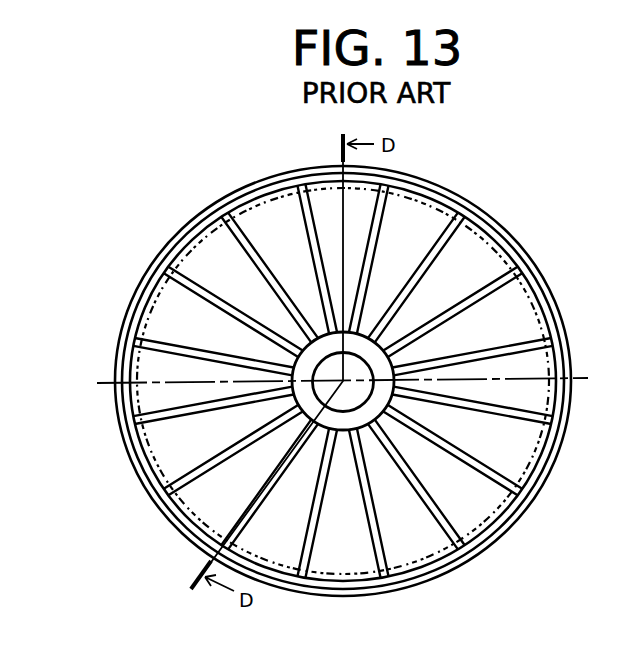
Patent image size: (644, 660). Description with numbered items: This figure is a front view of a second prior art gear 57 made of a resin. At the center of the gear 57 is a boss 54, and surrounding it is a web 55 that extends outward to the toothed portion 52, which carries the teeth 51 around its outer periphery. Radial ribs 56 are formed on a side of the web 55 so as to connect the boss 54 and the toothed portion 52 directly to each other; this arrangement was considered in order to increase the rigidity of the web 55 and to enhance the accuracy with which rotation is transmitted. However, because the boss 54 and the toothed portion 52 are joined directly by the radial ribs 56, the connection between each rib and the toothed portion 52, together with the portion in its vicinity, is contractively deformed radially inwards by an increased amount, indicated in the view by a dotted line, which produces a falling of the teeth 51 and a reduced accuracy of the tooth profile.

The teeth 51 is at (501, 534).
The toothed portion 52 is at (556, 462).
The boss 54 is at (388, 412).
The web 55 is at (500, 330).
The radial ribs 56 is at (470, 307).
The gear 57 is at (549, 247).